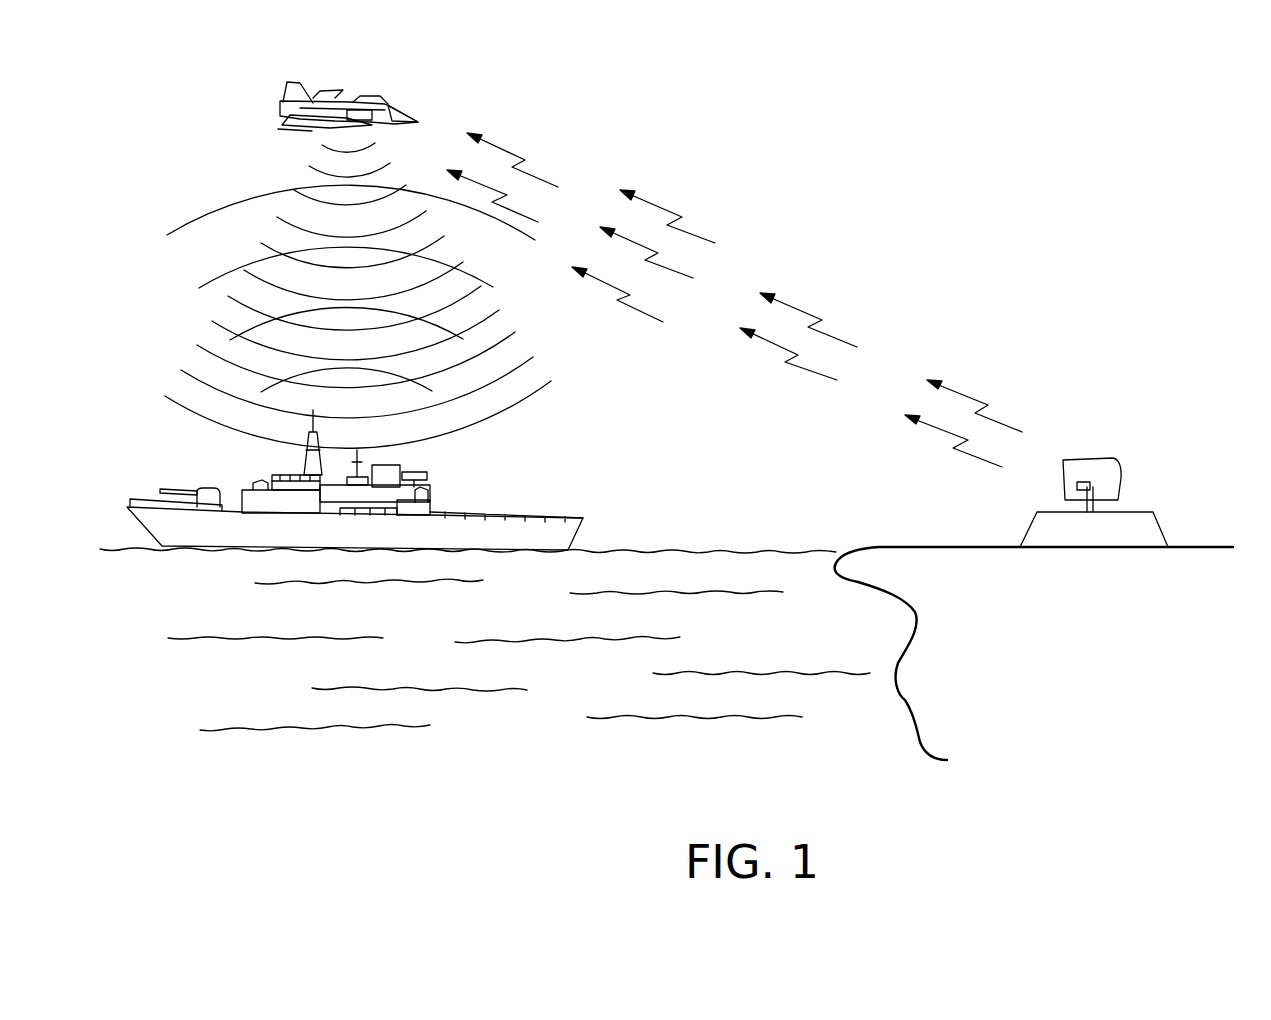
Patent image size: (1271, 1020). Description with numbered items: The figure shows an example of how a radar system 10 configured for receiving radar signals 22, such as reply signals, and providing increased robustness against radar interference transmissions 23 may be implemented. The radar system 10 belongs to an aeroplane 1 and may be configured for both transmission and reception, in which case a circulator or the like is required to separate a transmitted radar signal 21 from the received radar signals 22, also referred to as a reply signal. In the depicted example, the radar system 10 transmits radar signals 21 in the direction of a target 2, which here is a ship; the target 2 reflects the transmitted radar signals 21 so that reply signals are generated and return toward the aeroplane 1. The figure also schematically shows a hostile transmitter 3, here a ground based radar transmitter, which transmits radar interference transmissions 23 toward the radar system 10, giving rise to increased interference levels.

The aeroplane 1 is at (355, 92).
The radar system 10 is at (396, 96).
The target 2 is at (535, 533).
The hostile transmitter 3 is at (1137, 440).
The transmitted radar signal 21 is at (170, 358).
The received radar signals 22 is at (195, 193).
The radar interference transmissions 23 is at (836, 294).